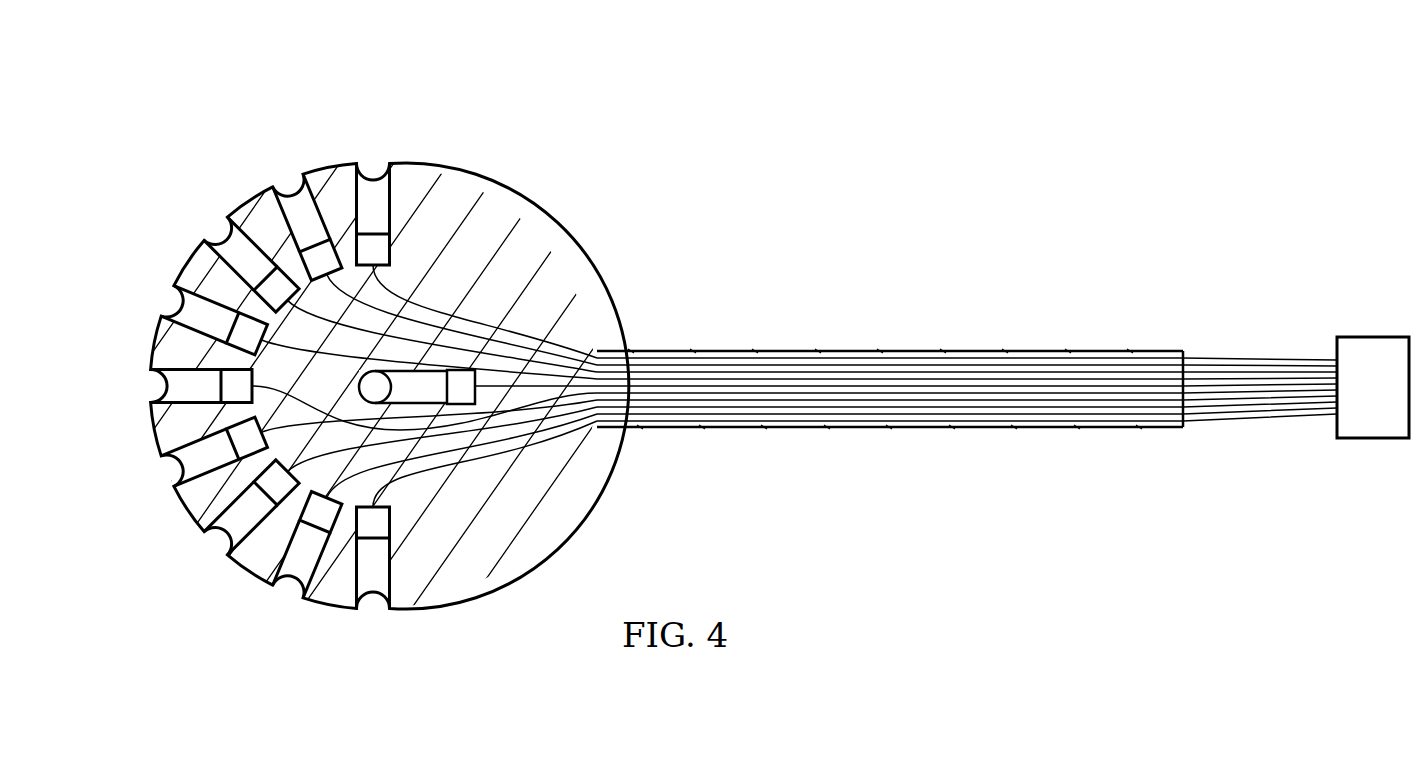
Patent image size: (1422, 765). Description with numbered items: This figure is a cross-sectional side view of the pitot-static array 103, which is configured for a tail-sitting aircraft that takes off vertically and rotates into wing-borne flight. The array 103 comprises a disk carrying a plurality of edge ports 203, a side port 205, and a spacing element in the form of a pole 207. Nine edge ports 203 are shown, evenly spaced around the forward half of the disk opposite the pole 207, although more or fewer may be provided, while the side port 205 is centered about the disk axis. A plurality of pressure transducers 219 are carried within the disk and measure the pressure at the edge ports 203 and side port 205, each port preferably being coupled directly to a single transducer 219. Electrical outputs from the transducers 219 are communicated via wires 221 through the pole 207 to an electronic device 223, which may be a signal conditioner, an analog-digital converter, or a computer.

The pitot-static array 103 is at (172, 95).
The edge ports 203 is at (283, 168).
The side port 205 is at (376, 402).
The pole 207 is at (922, 428).
The pressure transducers 219 is at (292, 272).
The wires 221 is at (1258, 415).
The electronic device 223 is at (1372, 337).